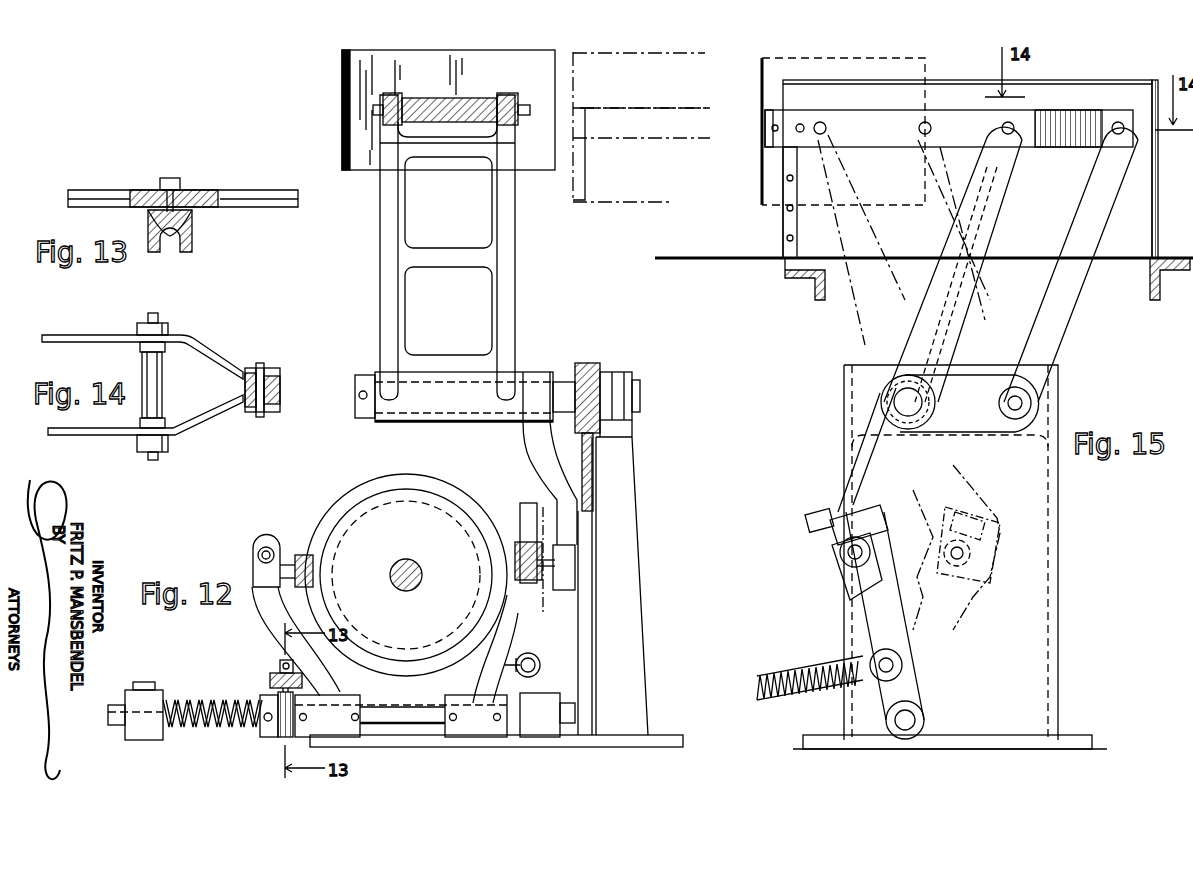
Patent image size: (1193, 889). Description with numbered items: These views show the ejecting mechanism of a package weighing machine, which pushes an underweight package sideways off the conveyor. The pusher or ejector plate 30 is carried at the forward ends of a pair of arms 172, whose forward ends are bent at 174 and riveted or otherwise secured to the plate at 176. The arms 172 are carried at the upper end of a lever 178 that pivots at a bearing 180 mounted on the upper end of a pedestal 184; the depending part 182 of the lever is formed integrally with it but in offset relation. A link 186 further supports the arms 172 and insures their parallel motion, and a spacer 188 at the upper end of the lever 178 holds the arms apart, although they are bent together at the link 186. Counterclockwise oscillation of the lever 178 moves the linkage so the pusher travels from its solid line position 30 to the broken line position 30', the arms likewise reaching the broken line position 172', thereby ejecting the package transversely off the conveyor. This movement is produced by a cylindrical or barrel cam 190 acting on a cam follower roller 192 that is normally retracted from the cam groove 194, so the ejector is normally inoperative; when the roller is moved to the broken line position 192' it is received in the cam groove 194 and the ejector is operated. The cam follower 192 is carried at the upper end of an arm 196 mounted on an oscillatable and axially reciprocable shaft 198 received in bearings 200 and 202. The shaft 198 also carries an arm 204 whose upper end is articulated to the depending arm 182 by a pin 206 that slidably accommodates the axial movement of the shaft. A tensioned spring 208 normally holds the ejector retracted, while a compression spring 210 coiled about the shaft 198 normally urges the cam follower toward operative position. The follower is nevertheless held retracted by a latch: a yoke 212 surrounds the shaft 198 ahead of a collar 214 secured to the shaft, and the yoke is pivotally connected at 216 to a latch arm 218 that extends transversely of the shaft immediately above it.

In FIG. 12, the pusher or ejector plate 30 is at (448, 92).
In FIG. 15, the pusher or ejector plate 30 is at (924, 160).
In FIG. 12, the broken line position of ejector 30' is at (641, 110).
In FIG. 14, the arms 172 is at (142, 389).
In FIG. 12, the arms 172 is at (477, 76).
In FIG. 15, the arms 172 is at (949, 186).
In FIG. 12, the broken line position of arms 172' is at (647, 86).
In FIG. 15, the bent forward ends of arms 174 is at (768, 145).
In FIG. 15, the rivet connection 176 is at (768, 126).
In FIG. 14, the lever 178 is at (172, 327).
In FIG. 12, the lever 178 is at (516, 268).
In FIG. 15, the lever 178 is at (968, 295).
In FIG. 12, the pivot bearing 180 is at (352, 395).
In FIG. 15, the pivot bearing 180 is at (880, 405).
In FIG. 12, the depending part of lever 182 is at (545, 475).
In FIG. 15, the depending part of lever 182 is at (875, 470).
In FIG. 12, the pedestal 184 is at (622, 540).
In FIG. 15, the pedestal 184 is at (1015, 555).
In FIG. 14, the link 186 is at (280, 385).
In FIG. 15, the link 186 is at (1060, 300).
In FIG. 14, the spacer 188 is at (162, 388).
In FIG. 12, the spacer 188 is at (462, 100).
In FIG. 12, the cylindrical cam or barrel cam 190 is at (418, 490).
In FIG. 12, the cam follower roller 192 is at (291, 545).
In FIG. 12, the broken line position of cam follower 192' is at (348, 508).
In FIG. 12, the cam groove 194 is at (378, 490).
In FIG. 12, the arm 196 is at (280, 615).
In FIG. 12, the shaft 198 is at (380, 705).
In FIG. 12, the bearing 200 is at (145, 740).
In FIG. 12, the bearing 202 is at (548, 700).
In FIG. 12, the arm 204 is at (525, 640).
In FIG. 15, the arm 204 is at (875, 628).
In FIG. 12, the pin 206 is at (552, 545).
In FIG. 15, the pin 206 is at (845, 555).
In FIG. 12, the tensioned spring 208 is at (540, 662).
In FIG. 15, the tensioned spring 208 is at (808, 690).
In FIG. 12, the compression spring 210 is at (190, 700).
In FIG. 13, the yoke 212 is at (192, 236).
In FIG. 12, the yoke 212 is at (285, 740).
In FIG. 12, the collar 214 is at (262, 738).
In FIG. 13, the pivot connection 216 is at (180, 191).
In FIG. 12, the pivot connection 216 is at (280, 665).
In FIG. 13, the latch arm 218 is at (228, 196).
In FIG. 12, the latch arm 218 is at (268, 683).